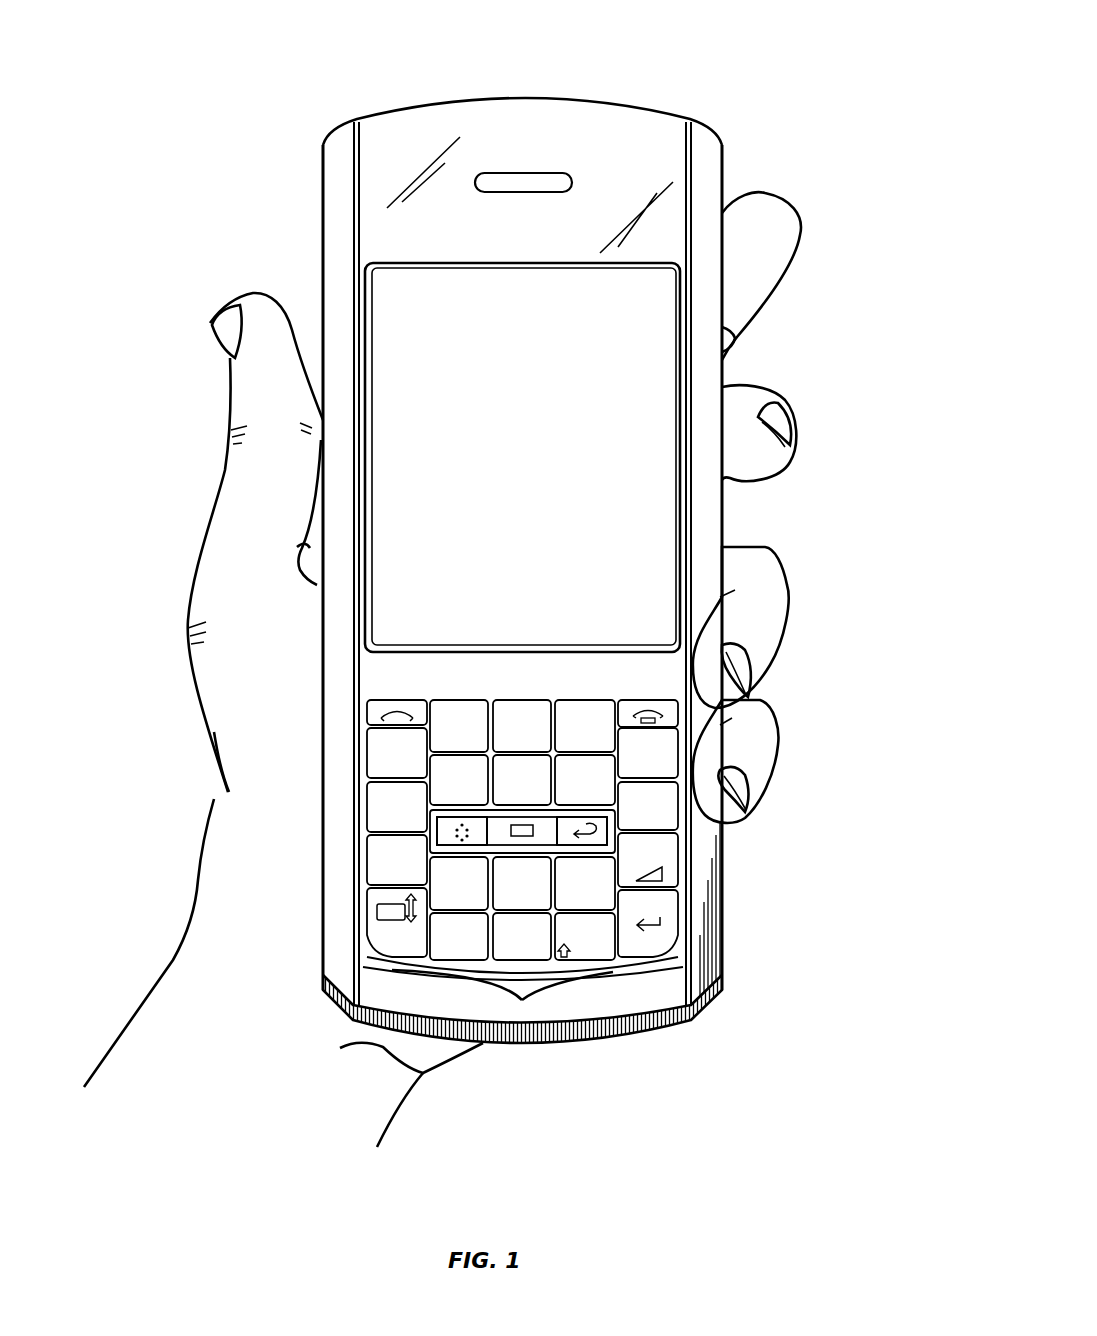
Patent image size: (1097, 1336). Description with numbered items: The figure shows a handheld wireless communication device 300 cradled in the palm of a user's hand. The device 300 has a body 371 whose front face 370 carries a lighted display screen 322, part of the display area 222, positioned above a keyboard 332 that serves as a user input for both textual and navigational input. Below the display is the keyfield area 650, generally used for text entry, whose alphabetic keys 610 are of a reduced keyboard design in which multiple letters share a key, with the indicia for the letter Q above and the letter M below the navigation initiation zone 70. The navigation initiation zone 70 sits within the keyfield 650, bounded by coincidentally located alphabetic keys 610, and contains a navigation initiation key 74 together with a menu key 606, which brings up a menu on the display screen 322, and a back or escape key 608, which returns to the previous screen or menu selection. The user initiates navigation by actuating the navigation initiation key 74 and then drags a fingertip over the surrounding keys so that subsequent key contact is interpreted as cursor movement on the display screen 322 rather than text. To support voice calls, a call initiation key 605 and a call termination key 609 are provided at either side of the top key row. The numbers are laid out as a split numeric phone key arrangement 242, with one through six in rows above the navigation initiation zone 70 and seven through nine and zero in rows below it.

The handheld wireless communication device 300 is at (780, 38).
The body 371 is at (313, 178).
The front face 370 is at (711, 160).
The display screen 322 is at (382, 306).
The display area 222 is at (658, 305).
The call initiation key 605 is at (366, 712).
The call termination key 609 is at (675, 713).
The menu key 606 is at (445, 823).
The back or escape key 608 is at (600, 830).
The alphabetic keys 610 is at (667, 820).
The navigation initiation key 74 is at (493, 840).
The navigation initiation zone 70 is at (597, 852).
The keyfield area 650 is at (372, 982).
The split numeric phone key arrangement 242 is at (522, 1000).
The keyboard 332 is at (571, 1000).